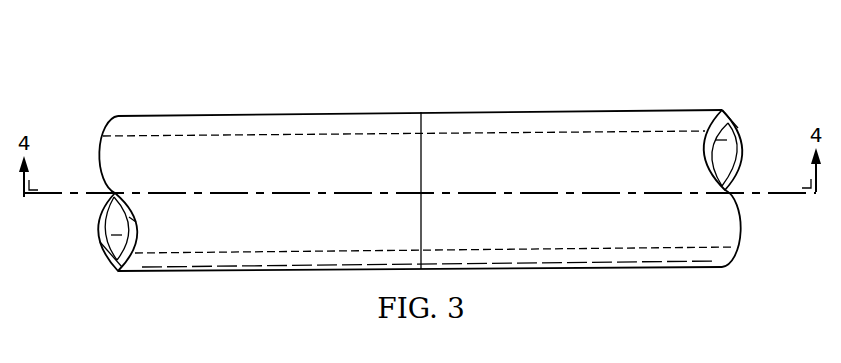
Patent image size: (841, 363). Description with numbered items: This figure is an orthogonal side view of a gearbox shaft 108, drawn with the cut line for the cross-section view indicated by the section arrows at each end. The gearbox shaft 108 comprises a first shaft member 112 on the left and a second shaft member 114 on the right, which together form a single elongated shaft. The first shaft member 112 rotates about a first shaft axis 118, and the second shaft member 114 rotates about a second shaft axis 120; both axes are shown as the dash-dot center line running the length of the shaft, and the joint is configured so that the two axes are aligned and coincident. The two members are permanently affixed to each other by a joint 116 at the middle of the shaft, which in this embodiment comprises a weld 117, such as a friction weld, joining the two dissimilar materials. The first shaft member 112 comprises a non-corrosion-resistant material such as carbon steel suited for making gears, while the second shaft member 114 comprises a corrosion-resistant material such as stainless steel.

The gearbox shaft 108 is at (519, 65).
The first shaft member 112 is at (160, 115).
The second shaft member 114 is at (673, 111).
The joint 116 is at (422, 215).
The weld 117 is at (420, 111).
The first shaft axis 118 is at (78, 192).
The second shaft axis 120 is at (762, 192).